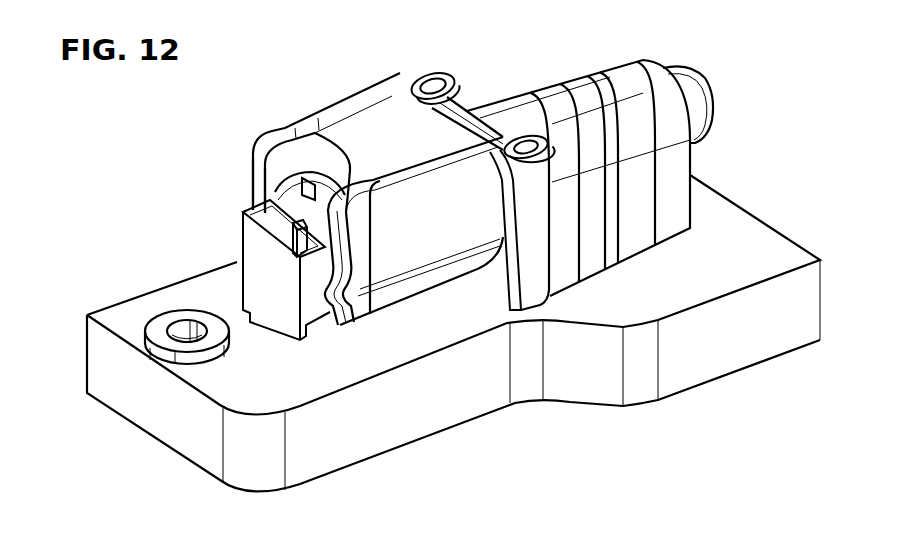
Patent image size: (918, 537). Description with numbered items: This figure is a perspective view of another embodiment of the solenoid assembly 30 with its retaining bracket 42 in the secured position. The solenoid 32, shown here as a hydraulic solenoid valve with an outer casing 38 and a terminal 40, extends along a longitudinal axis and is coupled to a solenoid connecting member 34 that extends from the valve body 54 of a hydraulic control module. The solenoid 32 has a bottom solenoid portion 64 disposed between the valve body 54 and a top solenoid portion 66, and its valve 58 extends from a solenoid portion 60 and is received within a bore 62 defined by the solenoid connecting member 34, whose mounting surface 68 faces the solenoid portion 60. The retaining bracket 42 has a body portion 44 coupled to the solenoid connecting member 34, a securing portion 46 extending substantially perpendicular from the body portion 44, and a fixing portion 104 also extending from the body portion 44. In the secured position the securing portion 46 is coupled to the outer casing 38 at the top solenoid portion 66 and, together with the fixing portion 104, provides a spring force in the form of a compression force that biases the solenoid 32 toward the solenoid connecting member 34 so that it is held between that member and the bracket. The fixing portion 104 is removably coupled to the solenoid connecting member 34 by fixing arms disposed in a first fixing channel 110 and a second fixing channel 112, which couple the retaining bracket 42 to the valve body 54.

The solenoid assembly 30 is at (172, 123).
The solenoid 32 is at (428, 254).
The solenoid connecting member 34 is at (517, 218).
The outer casing 38 is at (403, 258).
The terminal 40 is at (295, 241).
The retaining bracket 42 is at (322, 106).
The body portion 44 is at (377, 68).
The securing portion 46 is at (240, 176).
The valve body 54 is at (757, 240).
The valve 58 is at (710, 90).
The solenoid portion 60 is at (460, 296).
The bore 62 is at (493, 188).
The bottom solenoid portion 64 is at (357, 326).
The top solenoid portion 66 is at (392, 234).
The mounting surface 68 is at (503, 250).
The fixing portion 104 is at (463, 94).
The first fixing channel 110 is at (438, 76).
The second fixing channel 112 is at (533, 136).